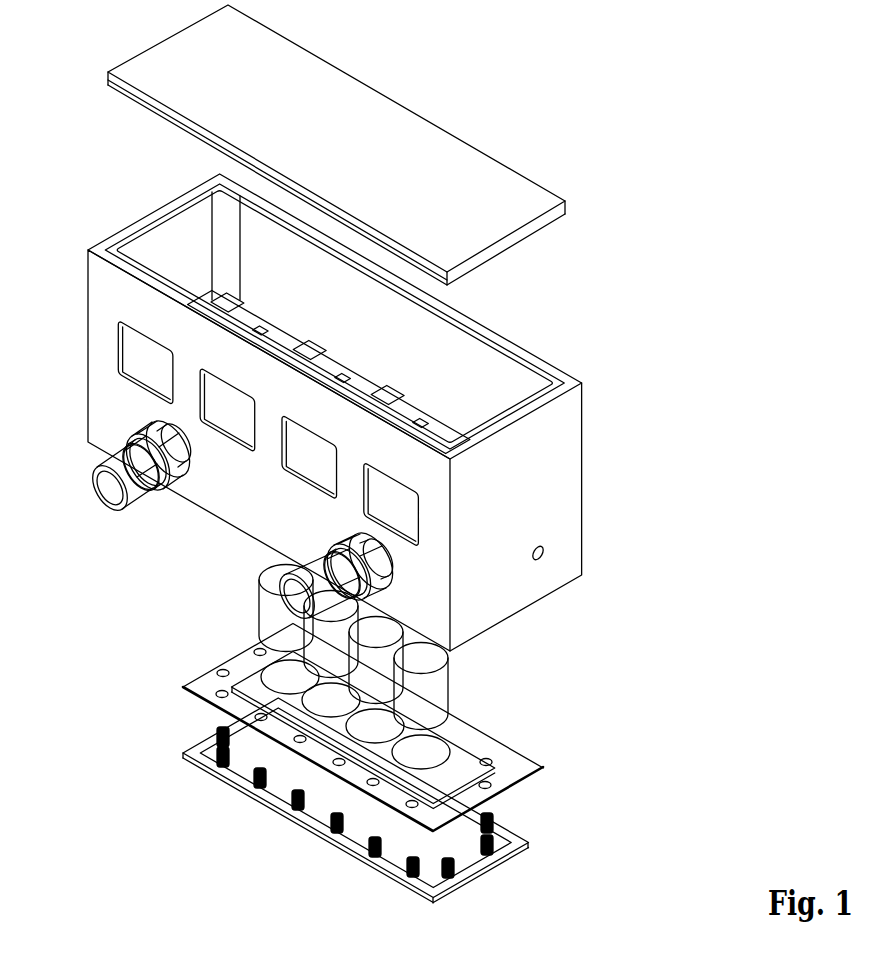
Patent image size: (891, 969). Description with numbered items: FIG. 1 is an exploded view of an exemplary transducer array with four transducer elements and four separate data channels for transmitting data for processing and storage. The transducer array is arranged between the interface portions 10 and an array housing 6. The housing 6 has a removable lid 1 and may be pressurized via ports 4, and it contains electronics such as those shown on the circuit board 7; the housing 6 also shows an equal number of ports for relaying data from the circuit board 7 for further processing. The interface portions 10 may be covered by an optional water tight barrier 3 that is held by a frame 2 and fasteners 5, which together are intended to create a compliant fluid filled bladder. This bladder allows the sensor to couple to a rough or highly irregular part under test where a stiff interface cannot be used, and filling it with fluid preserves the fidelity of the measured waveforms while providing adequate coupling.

The removable lid 1 is at (567, 202).
The frame 2 is at (532, 843).
The barrier 3 is at (543, 767).
The ports 4 is at (380, 578).
The fasteners 5 is at (500, 817).
The array housing 6 is at (593, 442).
The circuit board 7 is at (445, 412).
The interface portions 10 is at (460, 747).